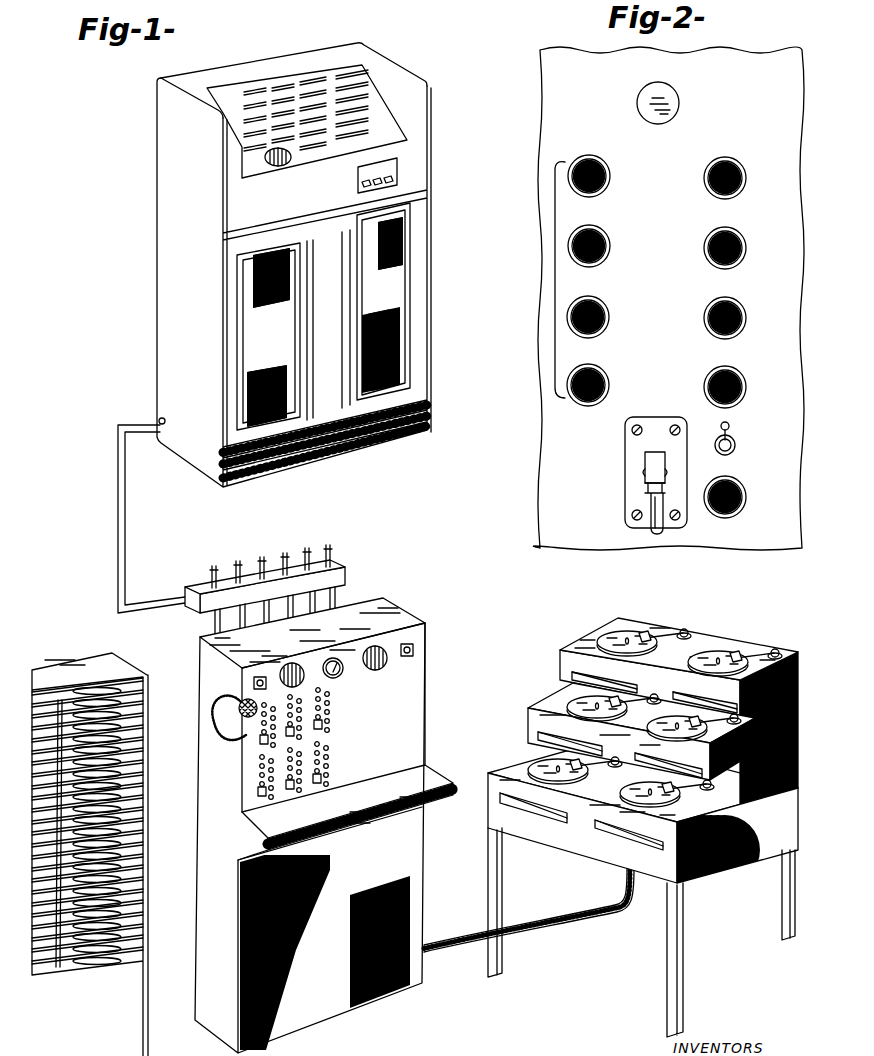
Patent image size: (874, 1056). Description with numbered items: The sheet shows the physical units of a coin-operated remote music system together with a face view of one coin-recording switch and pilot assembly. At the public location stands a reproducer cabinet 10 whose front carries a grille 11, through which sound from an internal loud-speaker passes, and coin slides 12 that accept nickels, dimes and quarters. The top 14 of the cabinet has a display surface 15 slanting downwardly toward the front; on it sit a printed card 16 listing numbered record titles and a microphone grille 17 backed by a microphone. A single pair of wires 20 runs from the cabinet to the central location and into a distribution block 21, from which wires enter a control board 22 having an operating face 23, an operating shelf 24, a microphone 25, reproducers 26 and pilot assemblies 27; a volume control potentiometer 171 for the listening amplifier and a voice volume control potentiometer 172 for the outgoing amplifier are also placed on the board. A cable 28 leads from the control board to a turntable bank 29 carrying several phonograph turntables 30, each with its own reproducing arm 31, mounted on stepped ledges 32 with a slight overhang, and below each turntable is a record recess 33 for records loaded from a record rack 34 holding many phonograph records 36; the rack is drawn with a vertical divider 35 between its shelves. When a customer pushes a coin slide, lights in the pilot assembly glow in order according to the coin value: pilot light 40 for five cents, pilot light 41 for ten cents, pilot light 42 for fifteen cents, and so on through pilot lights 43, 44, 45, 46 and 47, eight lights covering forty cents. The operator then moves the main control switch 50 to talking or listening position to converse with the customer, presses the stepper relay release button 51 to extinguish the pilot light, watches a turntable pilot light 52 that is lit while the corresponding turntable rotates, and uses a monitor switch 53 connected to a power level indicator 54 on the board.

In FIG. 1, the reproducer cabinet 10 is at (201, 351).
In FIG. 1, the grille 11 is at (393, 363).
In FIG. 1, the coin slides 12 is at (400, 186).
In FIG. 1, the top 14 is at (368, 55).
In FIG. 1, the display surface 15 is at (237, 87).
In FIG. 1, the printed card 16 is at (238, 113).
In FIG. 1, the microphone grille 17 is at (278, 166).
In FIG. 1, the pair of wires 20 is at (125, 499).
In FIG. 1, the distribution block 21 is at (345, 571).
In FIG. 1, the control board 22 is at (408, 622).
In FIG. 1, the operating face 23 is at (407, 707).
In FIG. 1, the operating shelf 24 is at (435, 777).
In FIG. 1, the microphone 25 is at (240, 714).
In FIG. 1, the reproducers 26 is at (374, 647).
In FIG. 1, the pilot assemblies 27 is at (262, 757).
In FIG. 2, the pilot assemblies 27 is at (553, 290).
In FIG. 1, the cable 28 is at (453, 940).
In FIG. 1, the turntable bank 29 is at (513, 760).
In FIG. 1, the phonograph turntables 30 is at (633, 638).
In FIG. 1, the reproducing arm 31 is at (667, 633).
In FIG. 1, the stepped ledges 32 is at (707, 642).
In FIG. 1, the record recess 33 is at (577, 677).
In FIG. 1, the record rack 34 is at (86, 1025).
In FIG. 1, the shelf divider 35 is at (68, 700).
In FIG. 1, the phonograph records 36 is at (97, 953).
In FIG. 2, the pilot light 40 is at (608, 176).
In FIG. 2, the pilot light 41 is at (745, 177).
In FIG. 2, the pilot light 42 is at (608, 246).
In FIG. 2, the pilot light 43 is at (745, 249).
In FIG. 2, the pilot light 44 is at (608, 318).
In FIG. 2, the pilot light 45 is at (745, 320).
In FIG. 2, the pilot light 46 is at (608, 387).
In FIG. 2, the pilot light 47 is at (745, 389).
In FIG. 2, the main control switch 50 is at (645, 466).
In FIG. 2, the stepper relay release button 51 is at (637, 101).
In FIG. 2, the turntable pilot light 52 is at (745, 498).
In FIG. 2, the monitor switch 53 is at (738, 441).
In FIG. 1, the power level indicator 54 is at (344, 673).
In FIG. 1, the volume control potentiometer 171 is at (254, 684).
In FIG. 1, the voice volume control potentiometer 172 is at (413, 650).